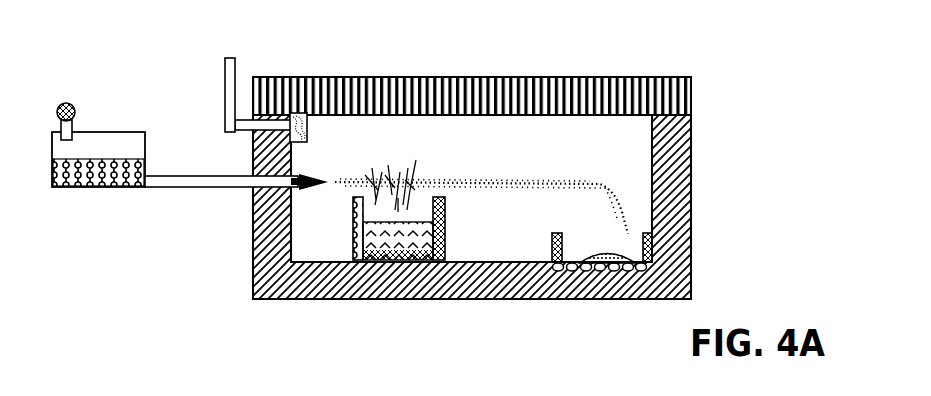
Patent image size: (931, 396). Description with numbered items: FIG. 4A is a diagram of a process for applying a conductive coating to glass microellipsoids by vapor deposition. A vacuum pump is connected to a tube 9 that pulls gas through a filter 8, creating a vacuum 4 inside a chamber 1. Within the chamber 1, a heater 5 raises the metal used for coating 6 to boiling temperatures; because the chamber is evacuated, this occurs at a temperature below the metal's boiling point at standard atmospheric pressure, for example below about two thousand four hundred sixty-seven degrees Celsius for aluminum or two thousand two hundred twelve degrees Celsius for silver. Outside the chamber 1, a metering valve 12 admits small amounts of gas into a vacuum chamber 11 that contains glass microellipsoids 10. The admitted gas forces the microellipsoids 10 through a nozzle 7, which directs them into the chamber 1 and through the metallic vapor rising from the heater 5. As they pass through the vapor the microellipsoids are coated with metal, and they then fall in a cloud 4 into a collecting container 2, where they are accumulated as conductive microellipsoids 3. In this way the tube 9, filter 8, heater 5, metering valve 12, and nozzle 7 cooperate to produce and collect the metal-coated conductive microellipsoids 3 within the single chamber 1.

The chamber 1 is at (692, 86).
The collecting container 2 is at (668, 240).
The conductive microellipsoids 3 is at (607, 254).
The vacuum 4 is at (523, 177).
The heater 5 is at (380, 297).
The metal used for coating 6 is at (313, 298).
The nozzle 7 is at (312, 188).
The filter 8 is at (305, 133).
The tube 9 is at (236, 67).
The glass microellipsoids 10 is at (112, 156).
The vacuum chamber 11 is at (97, 131).
The metering valve 12 is at (68, 104).